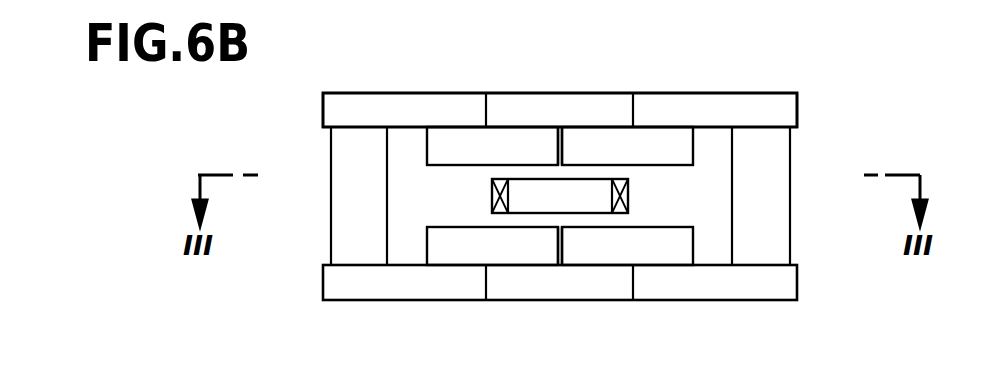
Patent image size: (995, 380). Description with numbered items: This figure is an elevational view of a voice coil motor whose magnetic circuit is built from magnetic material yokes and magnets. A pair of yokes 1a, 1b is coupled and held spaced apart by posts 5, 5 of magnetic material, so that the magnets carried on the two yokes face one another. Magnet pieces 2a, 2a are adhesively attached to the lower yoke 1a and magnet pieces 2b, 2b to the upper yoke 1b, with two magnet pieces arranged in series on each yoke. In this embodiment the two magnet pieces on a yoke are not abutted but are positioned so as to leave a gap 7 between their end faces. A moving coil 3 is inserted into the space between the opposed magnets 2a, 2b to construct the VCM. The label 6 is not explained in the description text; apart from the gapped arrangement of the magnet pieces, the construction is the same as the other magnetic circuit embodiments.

The linear motor unit 6 is at (388, 88).
The yoke 1a is at (412, 280).
The yoke 1b is at (756, 112).
The magnet pieces 2a is at (511, 243).
The magnet pieces 2b is at (527, 140).
The moving coil 3 is at (535, 203).
The posts 5 is at (347, 222).
The gap 7 is at (559, 127).